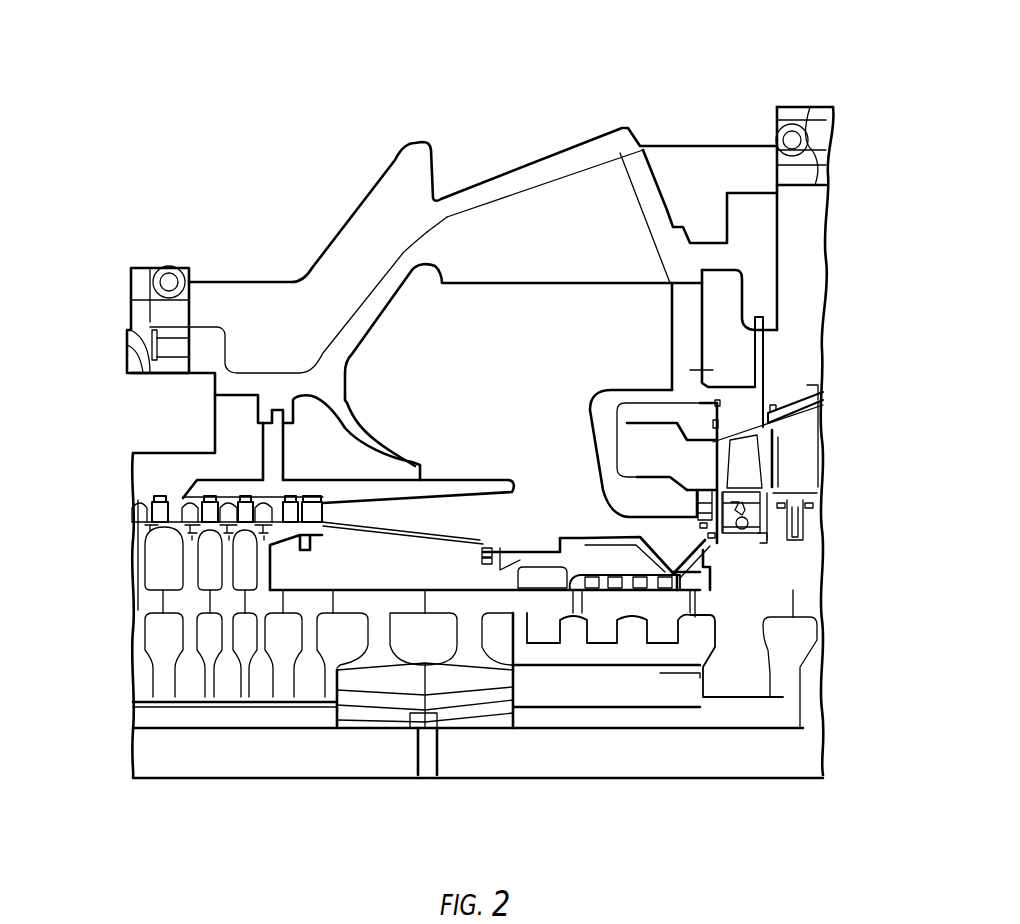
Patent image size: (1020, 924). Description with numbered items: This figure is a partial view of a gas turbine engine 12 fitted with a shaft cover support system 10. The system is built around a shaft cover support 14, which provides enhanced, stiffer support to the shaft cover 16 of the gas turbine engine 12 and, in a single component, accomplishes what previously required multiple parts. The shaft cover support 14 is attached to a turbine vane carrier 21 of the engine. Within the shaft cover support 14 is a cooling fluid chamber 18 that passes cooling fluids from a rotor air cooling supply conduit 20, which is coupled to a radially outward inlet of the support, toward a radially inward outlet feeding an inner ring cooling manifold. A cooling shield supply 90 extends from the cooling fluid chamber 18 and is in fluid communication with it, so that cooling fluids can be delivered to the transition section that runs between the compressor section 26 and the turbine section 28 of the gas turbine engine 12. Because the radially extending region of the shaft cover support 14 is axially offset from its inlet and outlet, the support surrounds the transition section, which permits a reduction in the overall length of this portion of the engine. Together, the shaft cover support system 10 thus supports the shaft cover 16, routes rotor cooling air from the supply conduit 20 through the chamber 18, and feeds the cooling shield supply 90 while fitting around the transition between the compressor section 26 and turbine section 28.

The shaft cover support system 10 is at (819, 317).
The gas turbine engine 12 is at (573, 97).
The shaft cover support 14 is at (600, 413).
The shaft cover 16 is at (588, 535).
The cooling fluid chamber 18 is at (603, 440).
The rotor air cooling supply conduit 20 is at (690, 315).
The turbine vane carrier 21 is at (763, 348).
The compressor section 26 is at (119, 563).
The turbine section 28 is at (837, 431).
The cooling shield supply 90 is at (628, 410).